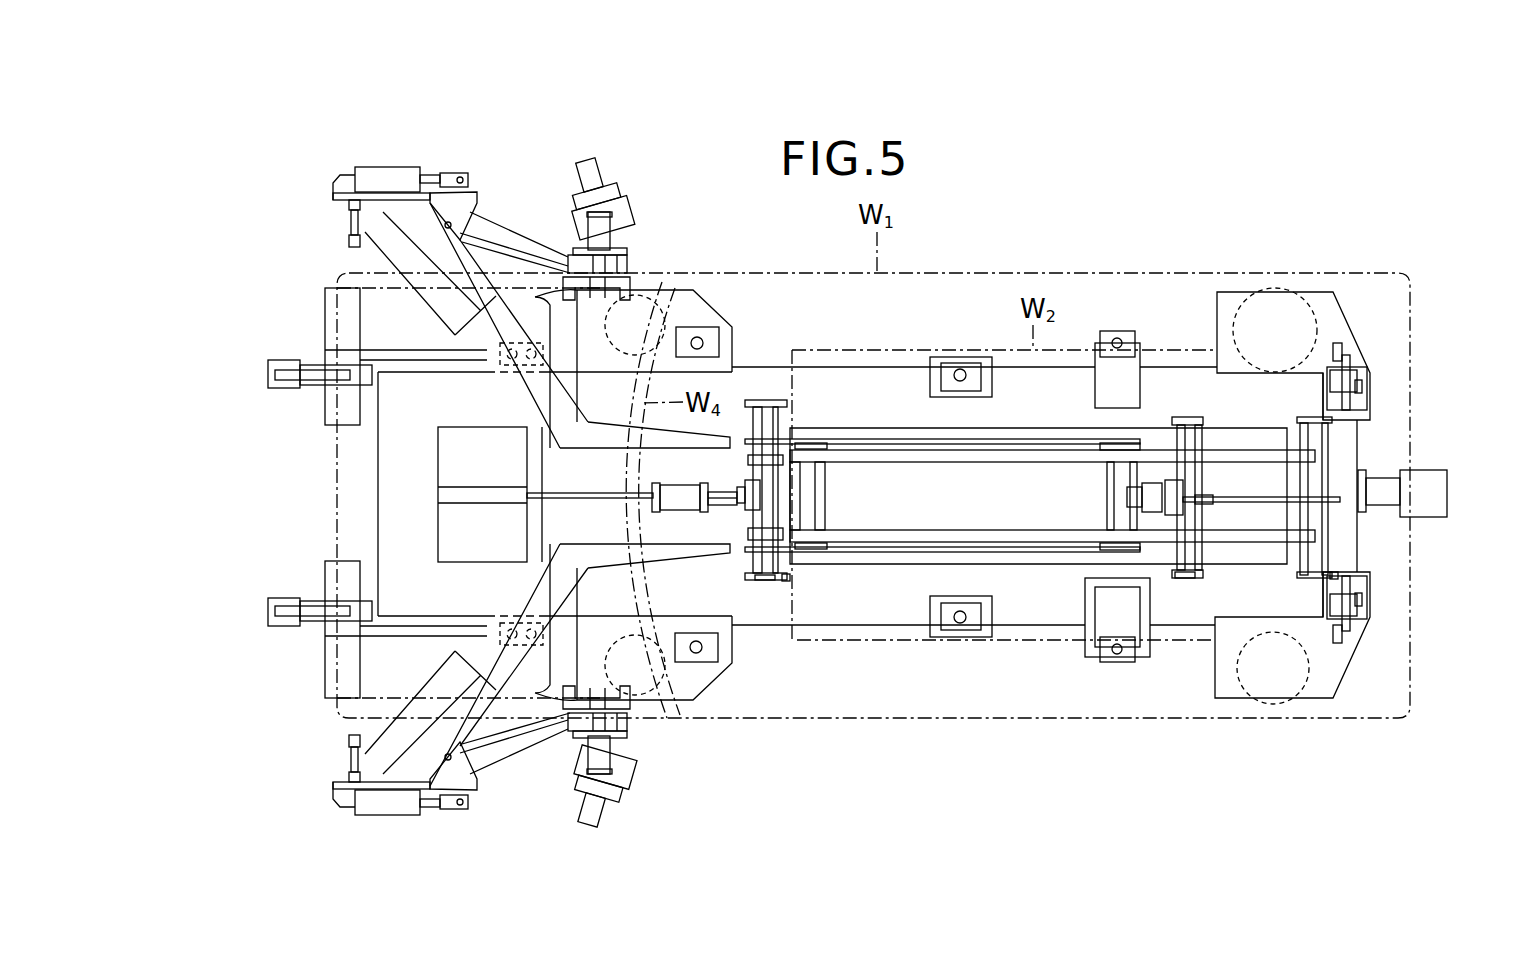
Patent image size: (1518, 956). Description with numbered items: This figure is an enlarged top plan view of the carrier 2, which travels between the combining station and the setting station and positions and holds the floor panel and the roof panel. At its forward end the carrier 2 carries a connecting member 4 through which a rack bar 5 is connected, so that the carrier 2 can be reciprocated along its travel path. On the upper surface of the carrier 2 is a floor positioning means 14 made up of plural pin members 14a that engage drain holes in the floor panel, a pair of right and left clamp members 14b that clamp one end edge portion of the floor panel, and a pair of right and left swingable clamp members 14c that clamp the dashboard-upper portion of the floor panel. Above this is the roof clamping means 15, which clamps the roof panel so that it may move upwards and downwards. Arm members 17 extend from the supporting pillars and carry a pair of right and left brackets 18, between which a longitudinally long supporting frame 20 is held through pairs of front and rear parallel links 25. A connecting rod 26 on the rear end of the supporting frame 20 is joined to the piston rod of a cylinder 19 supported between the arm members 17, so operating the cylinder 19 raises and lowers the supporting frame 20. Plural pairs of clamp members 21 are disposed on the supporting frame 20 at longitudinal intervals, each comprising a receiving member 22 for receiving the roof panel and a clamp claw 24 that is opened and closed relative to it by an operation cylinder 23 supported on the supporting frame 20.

The carrier 2 is at (887, 368).
The connecting member 4 is at (1414, 488).
The rack bar 5 is at (1440, 492).
The floor positioning means 14 is at (699, 691).
The pin member 14a is at (700, 344).
The clamp member 14b is at (302, 385).
The swingable clamp member 14c is at (620, 263).
The roof clamping means 15 is at (824, 418).
The arm member 17 is at (513, 385).
The bracket 18 is at (883, 440).
The cylinder 19 is at (680, 490).
The supporting frame 20 is at (887, 534).
The clamp member 21 is at (757, 386).
The receiving member 22 is at (760, 580).
The operation cylinder 23 is at (1125, 500).
The clamp claw 24 is at (785, 578).
The parallel link 25 is at (1125, 442).
The connecting rod 26 is at (727, 553).